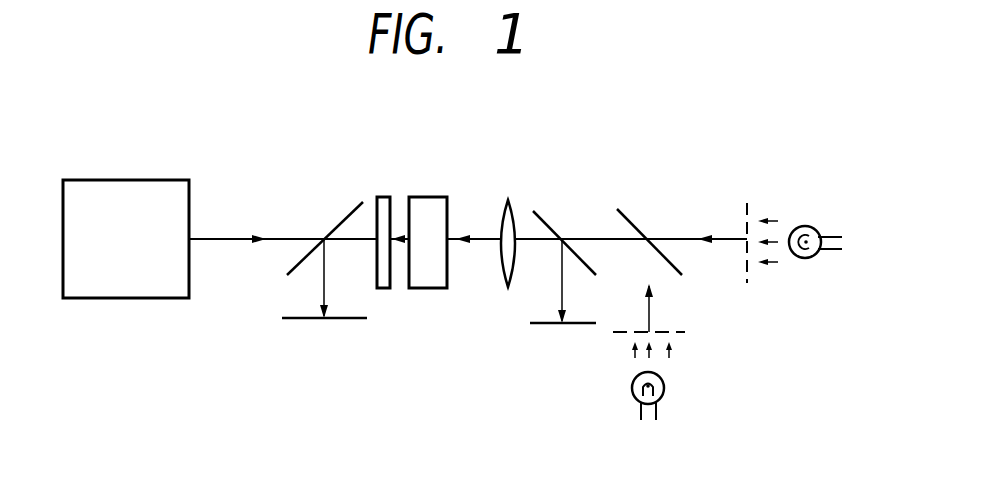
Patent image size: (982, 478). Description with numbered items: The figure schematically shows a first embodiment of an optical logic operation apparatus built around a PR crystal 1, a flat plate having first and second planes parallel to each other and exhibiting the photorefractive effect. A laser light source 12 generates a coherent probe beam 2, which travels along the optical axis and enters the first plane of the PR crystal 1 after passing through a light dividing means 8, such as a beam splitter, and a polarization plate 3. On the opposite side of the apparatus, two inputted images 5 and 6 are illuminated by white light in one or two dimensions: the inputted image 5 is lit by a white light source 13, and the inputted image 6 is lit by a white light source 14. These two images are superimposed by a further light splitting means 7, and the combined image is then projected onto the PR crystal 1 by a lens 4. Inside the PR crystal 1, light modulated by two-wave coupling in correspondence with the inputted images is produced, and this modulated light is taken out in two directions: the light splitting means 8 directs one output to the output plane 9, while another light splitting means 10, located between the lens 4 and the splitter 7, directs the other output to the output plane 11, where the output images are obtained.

The laser light source 12 is at (157, 180).
The coherent probe beam 2 is at (232, 236).
The means for dividing light 8 is at (343, 210).
The output plane 9 is at (348, 320).
The polarization plate 3 is at (384, 290).
The PR crystal 1 is at (428, 197).
The lens 4 is at (510, 206).
The means for dividing light 10 is at (547, 216).
The output plane 11 is at (578, 325).
The means for dividing light 7 is at (622, 213).
The inputted image 6 is at (685, 332).
The white light source 14 is at (662, 396).
The inputted image 5 is at (748, 204).
The white light source 13 is at (812, 256).